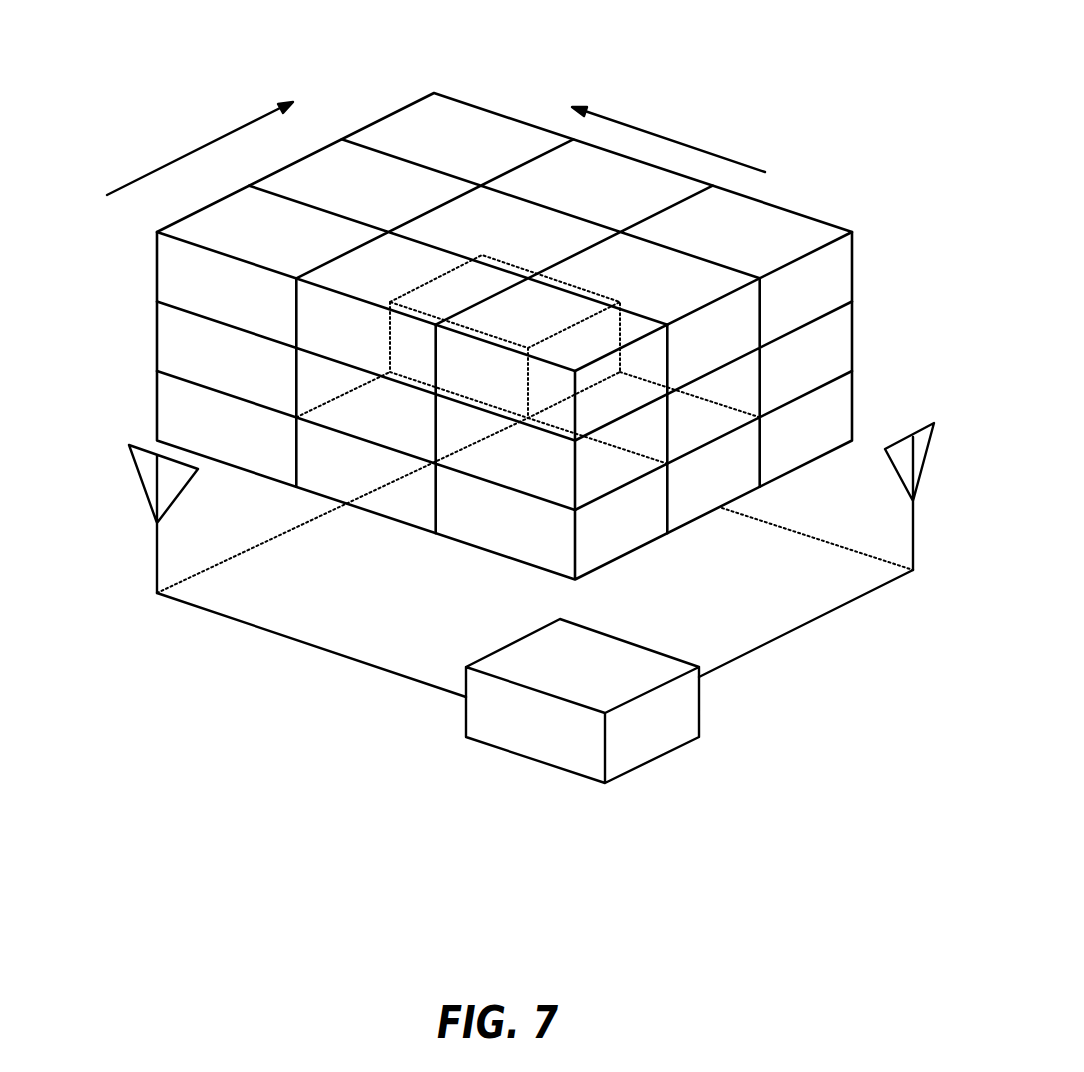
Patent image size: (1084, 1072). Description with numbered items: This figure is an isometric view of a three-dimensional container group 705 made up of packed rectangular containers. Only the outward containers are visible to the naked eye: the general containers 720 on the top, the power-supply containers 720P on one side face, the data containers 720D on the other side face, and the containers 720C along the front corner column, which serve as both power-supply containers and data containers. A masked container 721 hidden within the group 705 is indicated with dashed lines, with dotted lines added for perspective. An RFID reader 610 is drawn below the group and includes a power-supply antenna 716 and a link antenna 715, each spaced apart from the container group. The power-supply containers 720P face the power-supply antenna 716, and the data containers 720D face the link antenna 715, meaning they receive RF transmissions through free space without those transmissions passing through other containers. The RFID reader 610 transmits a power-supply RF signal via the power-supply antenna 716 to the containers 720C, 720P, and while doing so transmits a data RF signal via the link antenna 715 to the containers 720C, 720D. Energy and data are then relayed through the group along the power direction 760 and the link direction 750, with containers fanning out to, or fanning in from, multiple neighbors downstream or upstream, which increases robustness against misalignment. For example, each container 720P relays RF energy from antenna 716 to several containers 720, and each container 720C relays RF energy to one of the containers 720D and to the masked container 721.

The three-dimensional container group 705 is at (503, 303).
The container 720 is at (513, 169).
The data container 720D is at (156, 262).
The power-supply container 720P is at (854, 270).
The container that is both a power-supply container and a data container 720C is at (669, 350).
The masked container 721 is at (415, 289).
The link antenna 715 is at (140, 479).
The power-supply antenna 716 is at (895, 473).
The link direction 750 is at (193, 151).
The power direction 760 is at (673, 136).
The RFID reader 610 is at (494, 656).